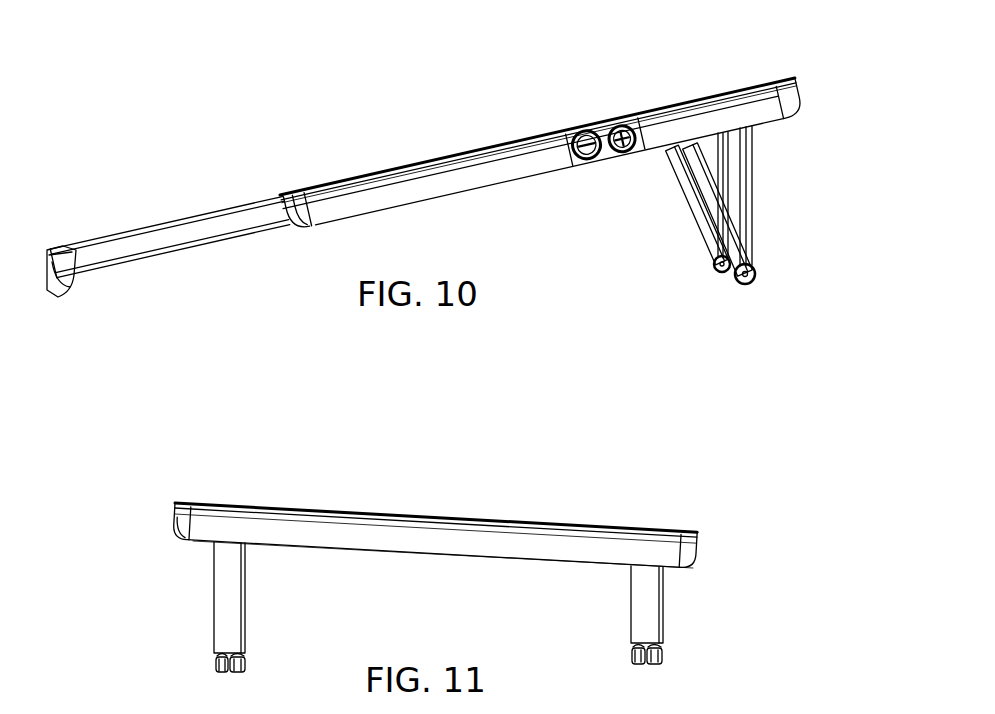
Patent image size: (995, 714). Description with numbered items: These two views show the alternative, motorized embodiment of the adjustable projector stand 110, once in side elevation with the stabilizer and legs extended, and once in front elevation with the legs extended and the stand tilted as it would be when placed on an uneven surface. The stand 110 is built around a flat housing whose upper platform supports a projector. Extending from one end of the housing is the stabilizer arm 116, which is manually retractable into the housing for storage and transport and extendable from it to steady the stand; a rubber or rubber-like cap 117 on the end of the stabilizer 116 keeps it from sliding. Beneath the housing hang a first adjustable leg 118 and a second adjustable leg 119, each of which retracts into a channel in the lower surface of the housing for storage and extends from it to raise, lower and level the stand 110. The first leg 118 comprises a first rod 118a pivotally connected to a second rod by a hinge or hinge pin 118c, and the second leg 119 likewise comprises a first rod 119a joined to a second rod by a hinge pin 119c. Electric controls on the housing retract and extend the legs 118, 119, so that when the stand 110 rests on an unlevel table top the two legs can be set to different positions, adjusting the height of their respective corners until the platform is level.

In FIG. 10, the projector stand 110 is at (157, 150).
In FIG. 11, the projector stand 110 is at (601, 478).
In FIG. 11, the stabilizer arm 116 is at (430, 553).
In FIG. 10, the cap 117 is at (65, 292).
In FIG. 10, the first adjustable leg 118 is at (756, 217).
In FIG. 11, the first adjustable leg 118 is at (210, 610).
In FIG. 11, the first rod 118a is at (220, 638).
In FIG. 11, the hinge pin 118c is at (227, 672).
In FIG. 10, the second adjustable leg 119 is at (695, 228).
In FIG. 11, the second adjustable leg 119 is at (667, 603).
In FIG. 11, the first rod 119a is at (663, 627).
In FIG. 11, the hinge pin 119c is at (638, 663).